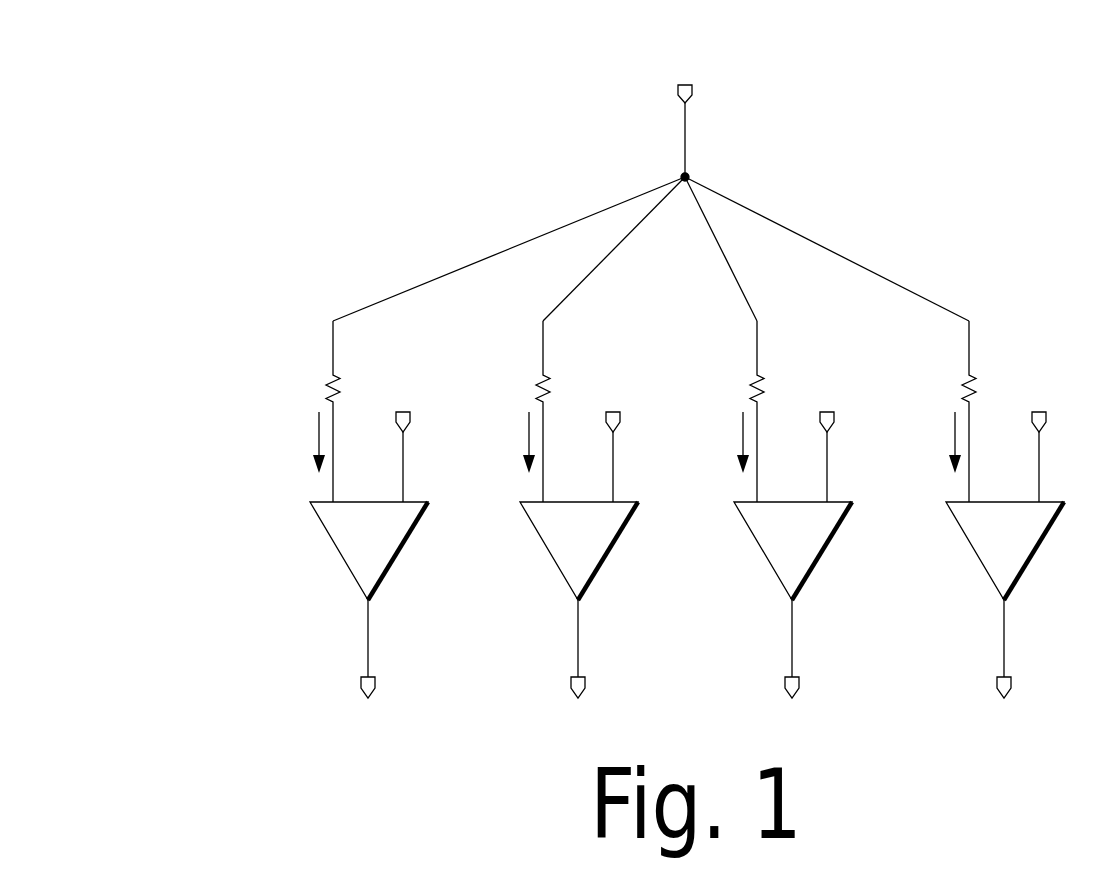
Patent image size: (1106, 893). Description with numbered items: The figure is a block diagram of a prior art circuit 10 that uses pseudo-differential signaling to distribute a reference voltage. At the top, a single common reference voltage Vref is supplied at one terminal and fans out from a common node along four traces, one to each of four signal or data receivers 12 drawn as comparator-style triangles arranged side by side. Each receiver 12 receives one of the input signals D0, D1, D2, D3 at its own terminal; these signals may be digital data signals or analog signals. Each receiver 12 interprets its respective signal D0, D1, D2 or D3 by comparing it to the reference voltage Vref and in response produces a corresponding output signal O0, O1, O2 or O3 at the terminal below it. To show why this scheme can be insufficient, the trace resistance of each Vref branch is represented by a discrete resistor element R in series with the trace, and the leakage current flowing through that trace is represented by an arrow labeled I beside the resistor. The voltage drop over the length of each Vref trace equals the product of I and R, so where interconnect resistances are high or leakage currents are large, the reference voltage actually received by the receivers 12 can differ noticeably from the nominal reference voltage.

The circuit 10 is at (886, 101).
The signal or data receivers 12 is at (328, 510).
The discrete resistor elements R is at (639, 411).
The leakage currents I is at (631, 442).
The common reference voltage Vref is at (651, 183).
The signal D0 is at (404, 440).
The signal D1 is at (614, 440).
The signal D2 is at (828, 440).
The signal D3 is at (1040, 440).
The output signal O0 is at (367, 668).
The output signal O1 is at (577, 668).
The output signal O2 is at (791, 668).
The output signal O3 is at (1003, 668).